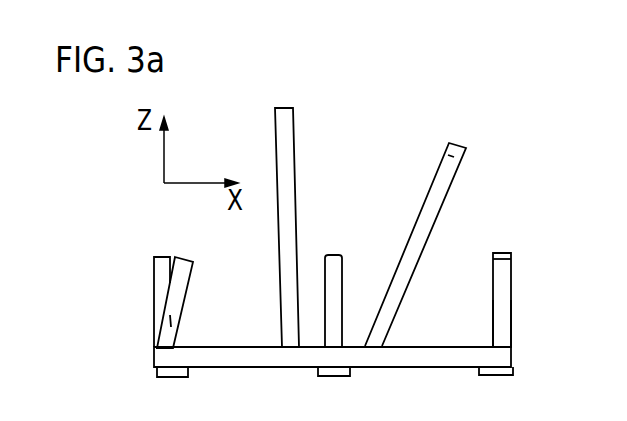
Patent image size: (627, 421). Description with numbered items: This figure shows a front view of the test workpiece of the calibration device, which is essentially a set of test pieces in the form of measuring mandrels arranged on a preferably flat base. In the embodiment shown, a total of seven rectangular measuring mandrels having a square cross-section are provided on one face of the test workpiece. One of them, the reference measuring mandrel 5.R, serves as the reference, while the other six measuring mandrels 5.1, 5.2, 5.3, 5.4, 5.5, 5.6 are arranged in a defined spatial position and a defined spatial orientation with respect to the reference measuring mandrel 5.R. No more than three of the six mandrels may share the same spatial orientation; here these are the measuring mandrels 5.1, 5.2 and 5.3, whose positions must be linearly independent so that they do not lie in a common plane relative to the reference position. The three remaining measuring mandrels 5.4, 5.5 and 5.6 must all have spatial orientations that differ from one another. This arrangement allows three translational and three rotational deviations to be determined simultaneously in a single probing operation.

The left upright post 5.1 is at (160, 273).
The right upright post 5.2 is at (507, 253).
The tall upright bar 5.3 is at (288, 195).
The inclined bar 5.4 is at (183, 275).
The right upright post lower portion 5.5 is at (505, 307).
The inclined strut 5.6 is at (415, 248).
The reference post 5.R is at (332, 273).